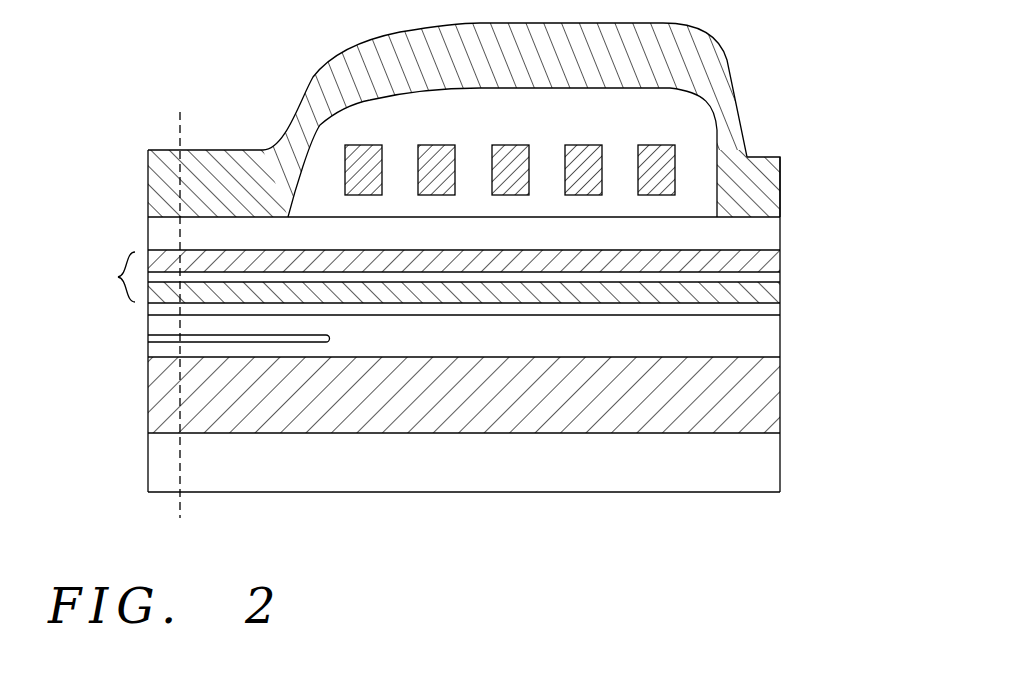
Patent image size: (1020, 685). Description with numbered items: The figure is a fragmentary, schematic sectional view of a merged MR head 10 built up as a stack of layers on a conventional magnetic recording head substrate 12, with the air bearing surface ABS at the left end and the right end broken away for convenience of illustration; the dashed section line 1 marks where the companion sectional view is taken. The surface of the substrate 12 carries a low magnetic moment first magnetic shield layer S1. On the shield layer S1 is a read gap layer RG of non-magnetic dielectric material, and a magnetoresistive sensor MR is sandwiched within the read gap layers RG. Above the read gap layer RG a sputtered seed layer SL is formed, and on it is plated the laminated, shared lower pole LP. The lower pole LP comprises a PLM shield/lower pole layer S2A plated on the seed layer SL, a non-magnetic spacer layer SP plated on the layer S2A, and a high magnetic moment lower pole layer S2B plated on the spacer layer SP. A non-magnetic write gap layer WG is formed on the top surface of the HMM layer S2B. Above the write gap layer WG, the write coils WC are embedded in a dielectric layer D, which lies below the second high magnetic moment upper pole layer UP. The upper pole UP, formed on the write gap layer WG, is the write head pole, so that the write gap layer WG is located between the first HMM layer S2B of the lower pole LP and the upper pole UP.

The merged MR head 10 is at (347, 510).
The air bearing surface ABS is at (98, 202).
The line 1— 1 is at (172, 116).
The upper pole layer UP is at (243, 160).
The dielectric layer D is at (342, 123).
The write coils WC is at (580, 163).
The write gap layer WG is at (767, 235).
The lower pole HMM layer S2B is at (773, 262).
The spacer layer SP is at (767, 278).
The PLM shield/lower pole layer S2A is at (767, 295).
The seed layer SL is at (767, 310).
The read gap layer RG is at (767, 345).
The magnetoresistive sensor MR is at (148, 340).
The lower pole LP is at (118, 277).
The first magnetic shield layer S1 is at (767, 396).
The substrate 12 is at (780, 465).